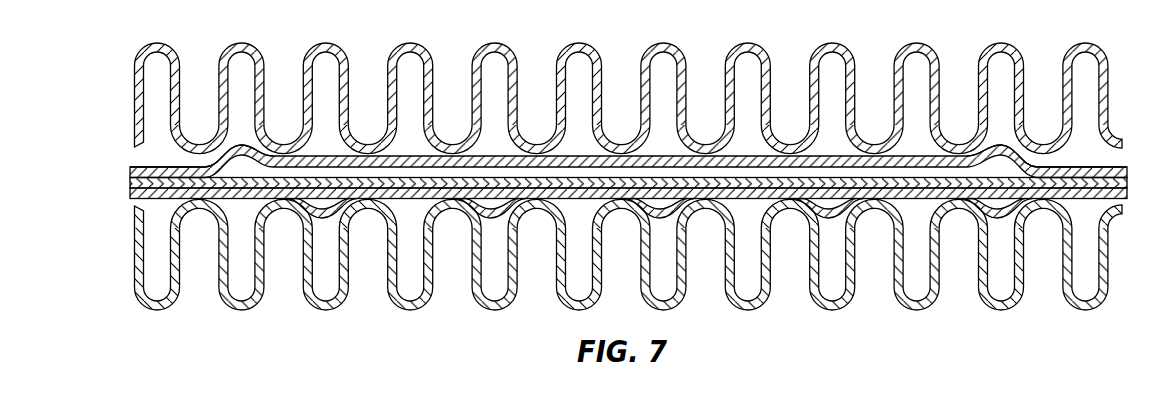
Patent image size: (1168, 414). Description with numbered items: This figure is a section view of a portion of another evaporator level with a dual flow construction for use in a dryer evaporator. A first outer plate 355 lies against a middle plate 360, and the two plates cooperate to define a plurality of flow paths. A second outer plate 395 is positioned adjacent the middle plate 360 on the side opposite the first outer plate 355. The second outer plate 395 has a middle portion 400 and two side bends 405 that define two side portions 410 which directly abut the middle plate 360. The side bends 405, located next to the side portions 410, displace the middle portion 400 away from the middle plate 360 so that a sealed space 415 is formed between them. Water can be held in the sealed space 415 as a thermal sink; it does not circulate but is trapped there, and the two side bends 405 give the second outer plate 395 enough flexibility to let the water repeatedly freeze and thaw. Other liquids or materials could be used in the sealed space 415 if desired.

The first outer plate 355 is at (138, 194).
The middle plate 360 is at (132, 181).
The second outer plate 395 is at (143, 168).
The middle portion 400 is at (492, 156).
The side bends 405 is at (238, 146).
The side portions 410 is at (167, 170).
The sealed space 415 is at (417, 172).